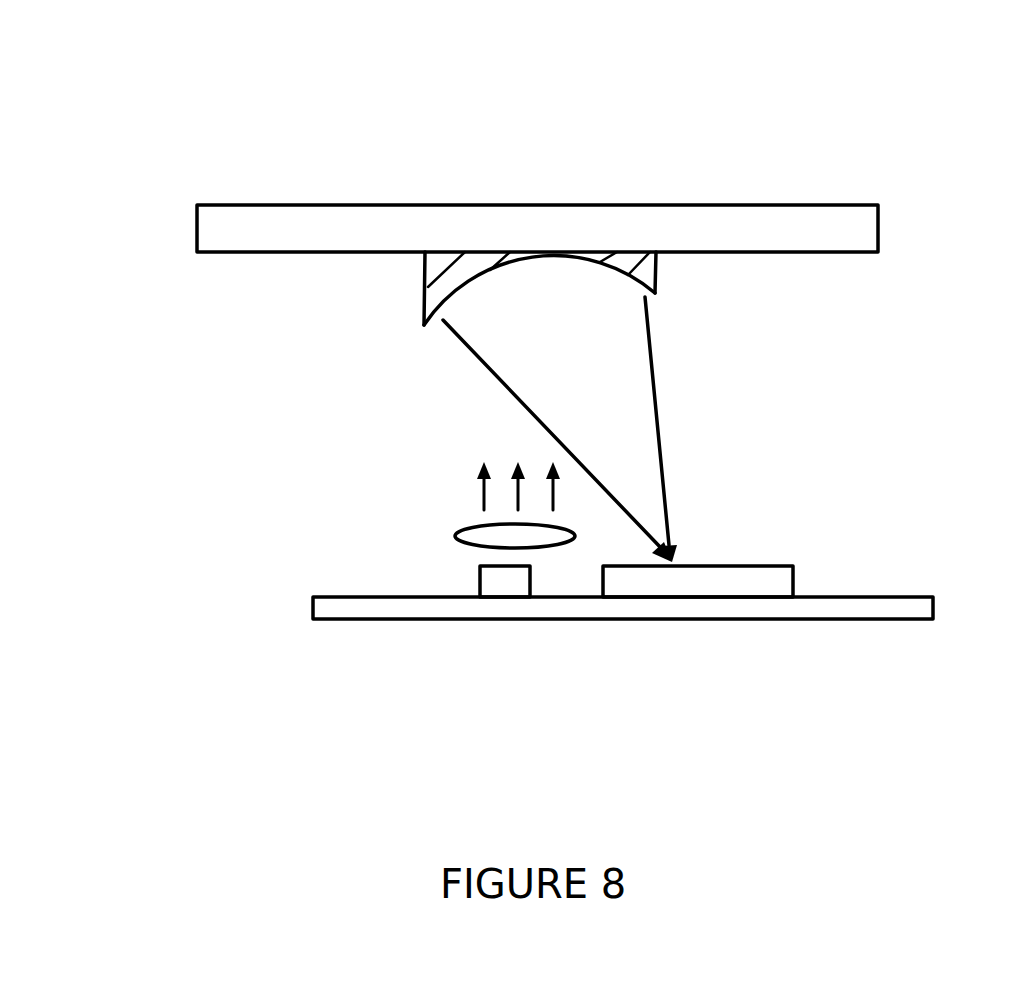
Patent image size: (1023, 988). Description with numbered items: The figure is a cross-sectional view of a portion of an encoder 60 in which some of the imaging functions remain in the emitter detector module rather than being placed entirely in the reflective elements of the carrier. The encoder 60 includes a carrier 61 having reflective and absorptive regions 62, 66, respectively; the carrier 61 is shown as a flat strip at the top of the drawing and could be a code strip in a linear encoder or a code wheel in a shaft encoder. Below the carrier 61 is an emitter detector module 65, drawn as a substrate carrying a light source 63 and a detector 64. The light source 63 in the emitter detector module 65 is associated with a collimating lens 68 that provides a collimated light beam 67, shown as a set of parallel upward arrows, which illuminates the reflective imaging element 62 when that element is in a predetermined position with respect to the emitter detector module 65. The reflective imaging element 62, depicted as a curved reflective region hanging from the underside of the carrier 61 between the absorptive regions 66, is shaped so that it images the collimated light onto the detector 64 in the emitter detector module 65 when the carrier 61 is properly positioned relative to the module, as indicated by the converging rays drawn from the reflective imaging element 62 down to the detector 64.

The encoder 60 is at (190, 154).
The carrier 61 is at (650, 222).
The reflective imaging element 62 is at (428, 288).
The light source 63 is at (511, 580).
The detector 64 is at (775, 583).
The emitter detector module 65 is at (865, 613).
The absorptive region 66 is at (312, 245).
The collimated light beam 67 is at (440, 486).
The collimating lens 68 is at (455, 537).